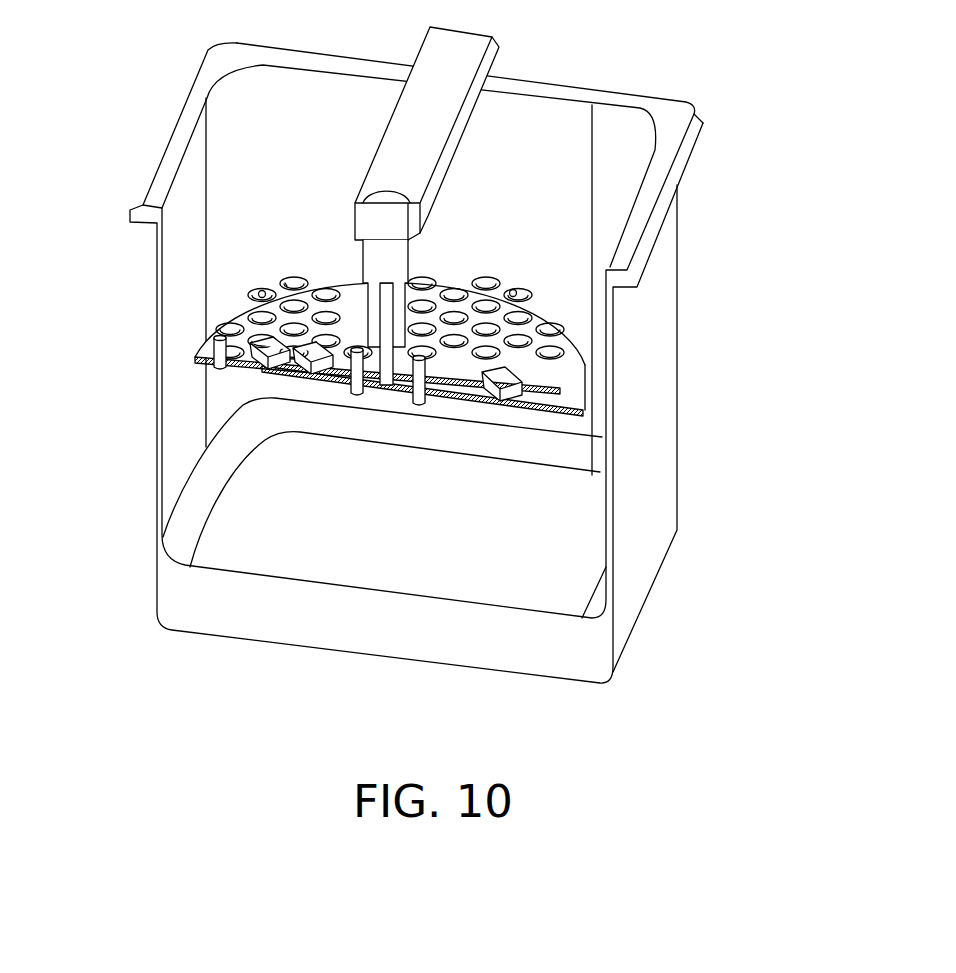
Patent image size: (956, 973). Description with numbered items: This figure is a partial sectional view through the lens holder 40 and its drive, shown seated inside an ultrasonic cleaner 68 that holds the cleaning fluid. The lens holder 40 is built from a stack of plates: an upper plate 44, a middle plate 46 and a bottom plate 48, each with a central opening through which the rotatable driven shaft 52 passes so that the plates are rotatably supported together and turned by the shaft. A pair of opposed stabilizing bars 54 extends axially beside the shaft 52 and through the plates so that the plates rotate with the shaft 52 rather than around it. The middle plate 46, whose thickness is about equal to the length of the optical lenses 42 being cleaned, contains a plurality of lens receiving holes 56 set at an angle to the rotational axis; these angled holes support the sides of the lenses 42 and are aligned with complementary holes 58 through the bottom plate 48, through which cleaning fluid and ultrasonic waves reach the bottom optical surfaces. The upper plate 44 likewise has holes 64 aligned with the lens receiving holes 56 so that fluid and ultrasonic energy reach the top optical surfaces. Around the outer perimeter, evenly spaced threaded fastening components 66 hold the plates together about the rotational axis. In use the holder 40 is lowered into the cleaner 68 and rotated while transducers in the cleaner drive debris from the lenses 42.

The lens holder 40 is at (384, 406).
The optical lenses 42 is at (262, 305).
The upper plate 44 is at (560, 357).
The middle plate 46 is at (574, 383).
The bottom plate 48 is at (588, 458).
The driven shaft 52 is at (386, 358).
The stabilizing bars 54 is at (318, 400).
The lens receiving holes 56 is at (486, 287).
The complementary holes 58 is at (480, 400).
The holes 64 is at (285, 283).
The threaded fastening components 66 is at (516, 289).
The ultrasonic cleaner 68 is at (444, 648).